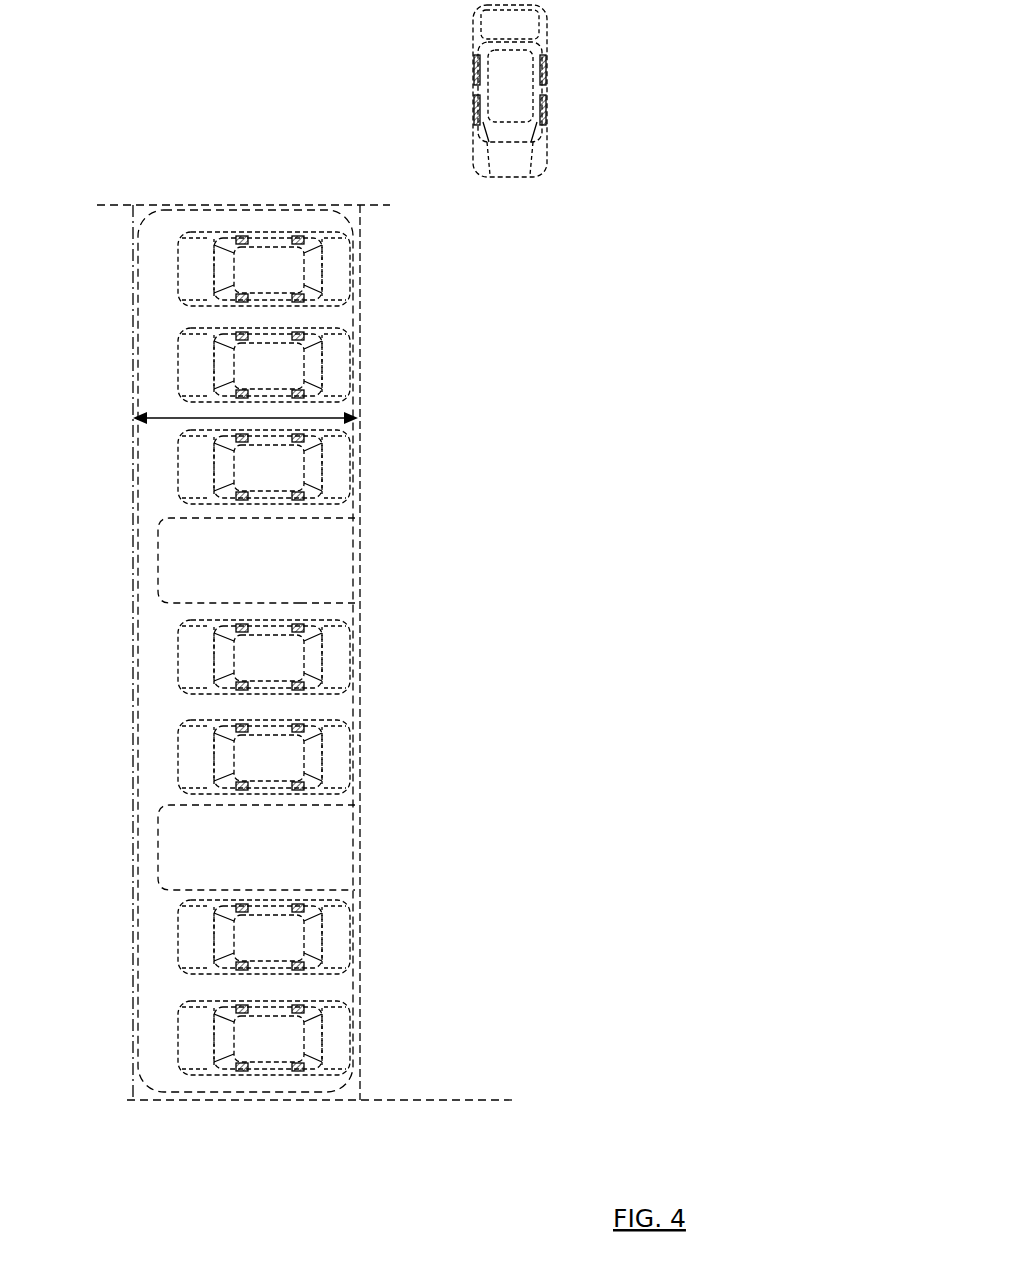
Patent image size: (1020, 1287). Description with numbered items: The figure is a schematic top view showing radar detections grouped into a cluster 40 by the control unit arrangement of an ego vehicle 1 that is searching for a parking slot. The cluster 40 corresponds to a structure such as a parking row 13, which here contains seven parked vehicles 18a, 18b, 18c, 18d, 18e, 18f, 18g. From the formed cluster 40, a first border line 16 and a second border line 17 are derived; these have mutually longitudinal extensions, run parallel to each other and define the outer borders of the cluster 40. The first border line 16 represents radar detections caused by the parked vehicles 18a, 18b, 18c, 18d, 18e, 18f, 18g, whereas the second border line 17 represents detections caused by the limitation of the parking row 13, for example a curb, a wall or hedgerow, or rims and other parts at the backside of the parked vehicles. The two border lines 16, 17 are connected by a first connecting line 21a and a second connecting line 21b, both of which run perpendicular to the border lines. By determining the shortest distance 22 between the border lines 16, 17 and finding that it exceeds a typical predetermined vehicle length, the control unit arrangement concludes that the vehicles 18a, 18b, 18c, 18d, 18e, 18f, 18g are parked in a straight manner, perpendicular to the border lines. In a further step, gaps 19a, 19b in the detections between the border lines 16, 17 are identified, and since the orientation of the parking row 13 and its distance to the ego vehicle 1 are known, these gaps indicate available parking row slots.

The ego vehicle 1 is at (508, 90).
The parking row 13 is at (265, 1116).
The first border line 16 is at (363, 708).
The second border line 17 is at (128, 713).
The parked vehicle 18a is at (264, 269).
The parked vehicle 18b is at (264, 365).
The parked vehicle 18c is at (264, 467).
The parked vehicle 18d is at (264, 657).
The parked vehicle 18e is at (264, 757).
The parked vehicle 18f is at (264, 937).
The parked vehicle 18g is at (264, 1038).
The gap 19a is at (302, 570).
The gap 19b is at (305, 848).
The first connecting line 21a is at (122, 205).
The second connecting line 21b is at (417, 1098).
The shortest distance 22 is at (222, 418).
The cluster 40 is at (320, 602).